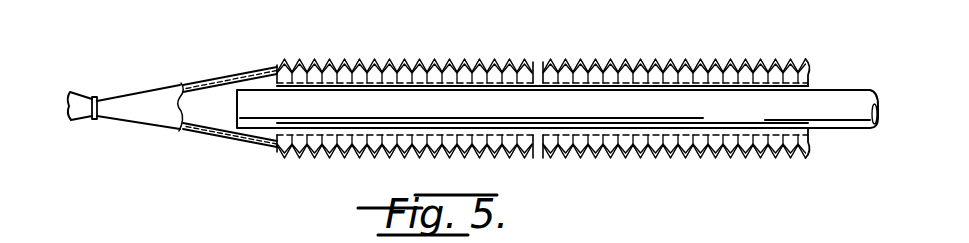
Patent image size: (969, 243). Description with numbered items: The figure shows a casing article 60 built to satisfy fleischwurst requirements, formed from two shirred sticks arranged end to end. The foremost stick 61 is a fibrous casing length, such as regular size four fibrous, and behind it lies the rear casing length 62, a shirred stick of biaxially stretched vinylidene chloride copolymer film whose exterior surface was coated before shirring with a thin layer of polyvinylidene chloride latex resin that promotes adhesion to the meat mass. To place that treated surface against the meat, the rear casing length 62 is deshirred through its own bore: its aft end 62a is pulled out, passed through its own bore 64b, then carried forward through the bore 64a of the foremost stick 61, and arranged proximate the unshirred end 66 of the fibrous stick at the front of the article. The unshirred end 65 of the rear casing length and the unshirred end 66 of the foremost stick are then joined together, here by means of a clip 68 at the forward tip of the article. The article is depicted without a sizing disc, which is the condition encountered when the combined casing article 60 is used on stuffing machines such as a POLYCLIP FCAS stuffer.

The casing article 60 is at (480, 52).
The foremost stick 61 is at (330, 60).
The rear casing length 62 is at (703, 62).
The aft end 62a is at (810, 82).
The bore of the foremost stick 64a is at (378, 150).
The bore of the rear casing length 64b is at (740, 150).
The unshirred end 65 is at (200, 132).
The unshirred end 66 is at (200, 81).
The clip 68 is at (94, 97).